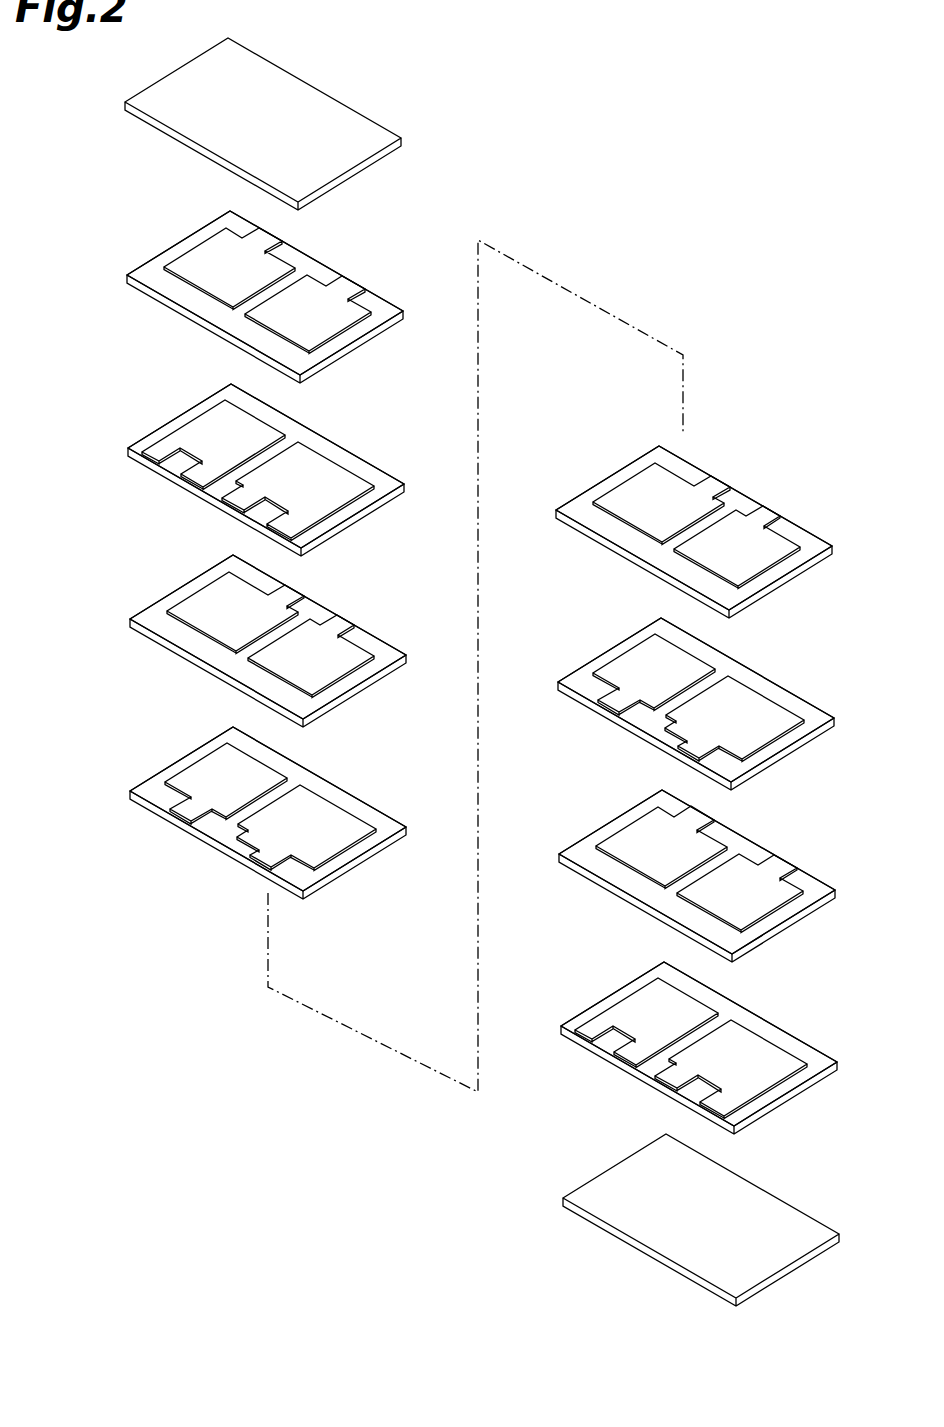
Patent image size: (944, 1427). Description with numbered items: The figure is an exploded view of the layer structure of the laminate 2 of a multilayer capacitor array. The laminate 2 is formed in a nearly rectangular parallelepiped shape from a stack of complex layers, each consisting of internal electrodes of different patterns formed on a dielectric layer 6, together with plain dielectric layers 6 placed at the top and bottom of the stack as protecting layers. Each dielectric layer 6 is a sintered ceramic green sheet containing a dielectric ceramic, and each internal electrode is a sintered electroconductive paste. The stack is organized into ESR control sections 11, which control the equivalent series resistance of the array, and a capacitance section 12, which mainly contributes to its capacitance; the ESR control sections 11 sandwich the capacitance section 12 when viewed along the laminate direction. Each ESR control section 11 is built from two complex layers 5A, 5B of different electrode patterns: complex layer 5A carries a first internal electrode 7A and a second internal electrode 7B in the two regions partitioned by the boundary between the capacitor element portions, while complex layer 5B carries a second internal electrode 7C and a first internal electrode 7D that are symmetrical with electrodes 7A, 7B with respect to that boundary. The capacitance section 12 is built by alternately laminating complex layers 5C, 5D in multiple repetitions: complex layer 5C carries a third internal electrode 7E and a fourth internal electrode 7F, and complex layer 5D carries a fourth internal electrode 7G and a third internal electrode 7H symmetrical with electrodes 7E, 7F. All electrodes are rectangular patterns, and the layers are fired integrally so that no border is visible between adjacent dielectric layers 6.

The laminate 2 is at (531, 1275).
The complex layer 5A is at (588, 795).
The complex layer 5B is at (590, 967).
The complex layer 5C is at (583, 458).
The complex layer 5D is at (582, 620).
The dielectric layer 6 is at (830, 1230).
The first internal electrode 7A is at (650, 825).
The second internal electrode 7B is at (750, 865).
The second internal electrode 7C is at (652, 995).
The first internal electrode 7D is at (752, 1040).
The third internal electrode 7E is at (645, 488).
The fourth internal electrode 7F is at (748, 525).
The fourth internal electrode 7G is at (645, 655).
The third internal electrode 7H is at (745, 697).
The ESR control section 11 is at (848, 1125).
The capacitance section 12 is at (848, 791).